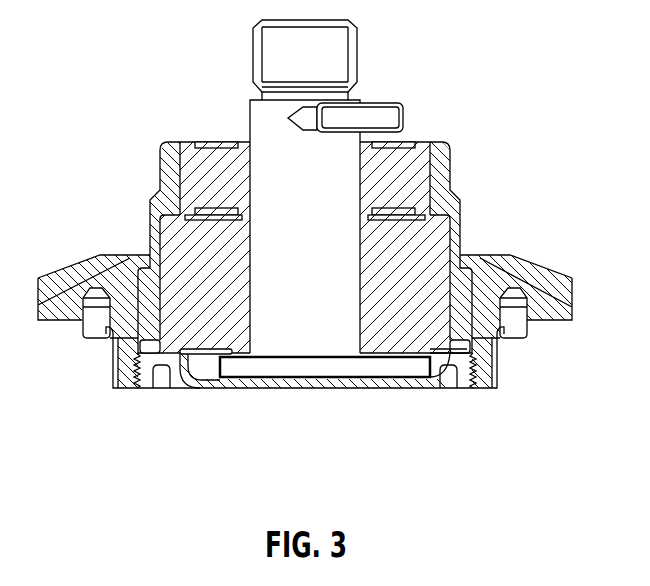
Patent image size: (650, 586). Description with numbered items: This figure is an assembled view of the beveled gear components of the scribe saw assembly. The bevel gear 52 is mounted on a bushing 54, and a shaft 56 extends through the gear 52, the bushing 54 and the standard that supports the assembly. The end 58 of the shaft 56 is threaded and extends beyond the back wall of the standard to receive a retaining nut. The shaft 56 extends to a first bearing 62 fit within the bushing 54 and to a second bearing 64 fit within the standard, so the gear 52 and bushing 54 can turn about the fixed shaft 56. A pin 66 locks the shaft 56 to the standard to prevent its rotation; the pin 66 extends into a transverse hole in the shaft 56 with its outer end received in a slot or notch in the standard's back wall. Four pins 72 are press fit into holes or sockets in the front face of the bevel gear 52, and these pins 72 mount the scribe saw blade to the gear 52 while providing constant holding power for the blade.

The bevel gear 52 is at (537, 273).
The bushing 54 is at (460, 220).
The shaft 56 is at (251, 122).
The end of the shaft 58 is at (253, 55).
The first bearing 62 is at (445, 365).
The second bearing 64 is at (437, 165).
The pin 66 is at (403, 117).
The pins 72 is at (95, 340).